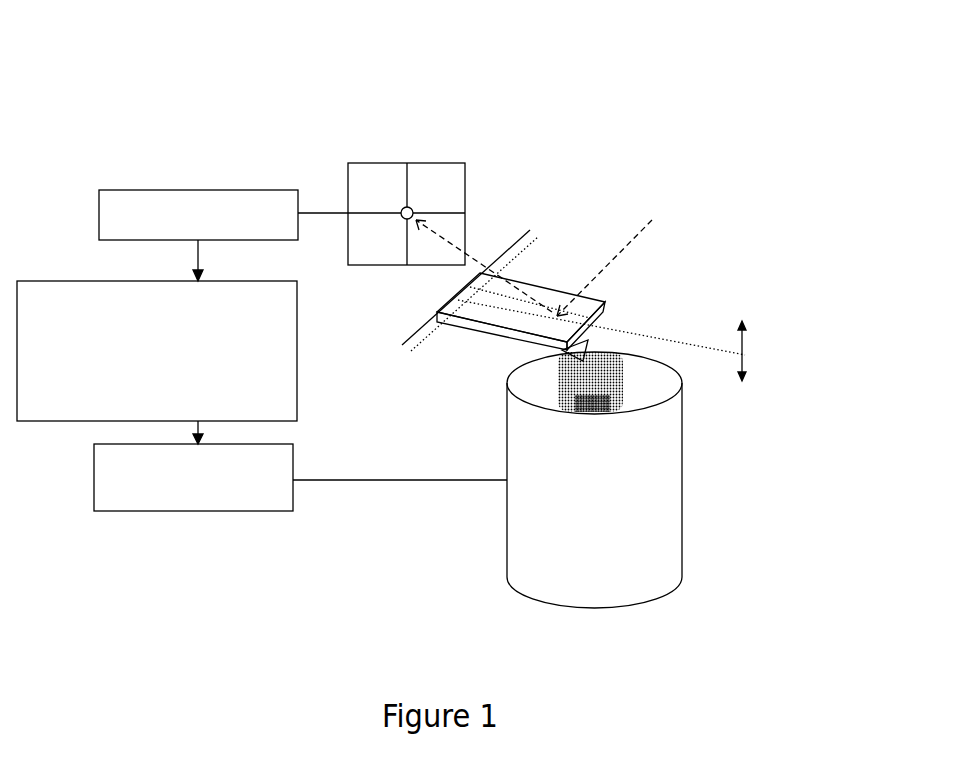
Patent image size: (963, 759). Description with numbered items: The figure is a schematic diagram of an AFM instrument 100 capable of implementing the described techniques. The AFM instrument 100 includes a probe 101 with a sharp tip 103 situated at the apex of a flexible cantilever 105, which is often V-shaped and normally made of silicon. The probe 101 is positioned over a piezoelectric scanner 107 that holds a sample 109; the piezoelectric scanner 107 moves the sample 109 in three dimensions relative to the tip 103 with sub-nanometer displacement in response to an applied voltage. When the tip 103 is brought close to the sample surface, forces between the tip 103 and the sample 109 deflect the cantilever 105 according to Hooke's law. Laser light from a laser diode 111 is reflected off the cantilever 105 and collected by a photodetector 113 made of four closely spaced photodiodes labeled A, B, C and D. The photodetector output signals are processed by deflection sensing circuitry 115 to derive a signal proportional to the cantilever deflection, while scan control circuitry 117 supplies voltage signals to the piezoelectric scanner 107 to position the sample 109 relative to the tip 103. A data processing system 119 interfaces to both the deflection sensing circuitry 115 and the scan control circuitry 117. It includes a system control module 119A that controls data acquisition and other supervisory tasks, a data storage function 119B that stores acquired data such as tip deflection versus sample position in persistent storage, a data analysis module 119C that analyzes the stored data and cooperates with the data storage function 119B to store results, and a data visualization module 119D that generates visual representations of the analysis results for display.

The AFM instrument 100 is at (651, 103).
The probe 101 is at (567, 294).
The tip 103 is at (598, 340).
The cantilever 105 is at (478, 337).
The piezoelectric scanner 107 is at (683, 543).
The sample 109 is at (612, 388).
The laser diode 111 is at (571, 253).
The photodetector 113 is at (426, 199).
The deflection sensing circuitry 115 is at (198, 185).
The scan control circuitry 117 is at (207, 515).
The data processing system 119 is at (185, 351).
The system control module 119A is at (133, 323).
The data storage function 119B is at (122, 350).
The data analysis module 119C is at (126, 376).
The data visualization module 119D is at (143, 403).